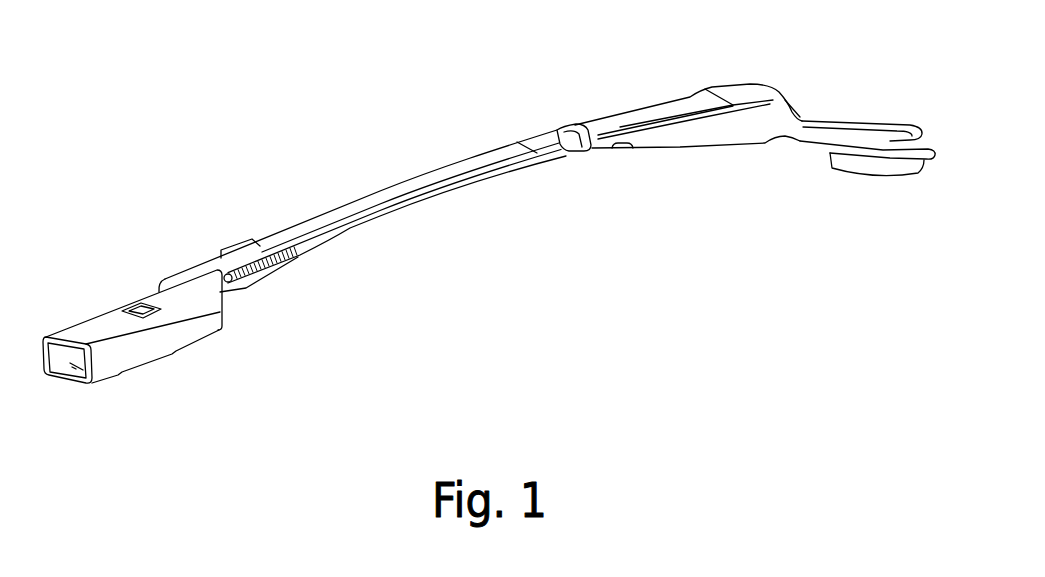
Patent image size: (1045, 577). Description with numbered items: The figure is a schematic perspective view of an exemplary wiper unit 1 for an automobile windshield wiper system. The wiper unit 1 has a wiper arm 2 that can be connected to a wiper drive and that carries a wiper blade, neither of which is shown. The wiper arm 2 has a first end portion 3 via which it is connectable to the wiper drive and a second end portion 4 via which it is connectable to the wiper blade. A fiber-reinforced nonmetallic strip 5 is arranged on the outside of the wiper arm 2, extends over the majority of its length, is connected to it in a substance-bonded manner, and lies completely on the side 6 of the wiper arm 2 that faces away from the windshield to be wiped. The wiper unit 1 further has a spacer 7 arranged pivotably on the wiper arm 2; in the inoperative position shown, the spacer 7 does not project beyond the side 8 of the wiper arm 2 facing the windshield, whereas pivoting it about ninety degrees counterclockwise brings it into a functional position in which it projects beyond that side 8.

The wiper unit 1 is at (421, 97).
The wiper arm 2 is at (583, 106).
The first end portion 3 is at (873, 138).
The second end portion 4 is at (149, 358).
The fiber-reinforced nonmetallic strip 5 is at (412, 187).
The side of the wiper arm facing away from the windshield 6 is at (680, 109).
The spacer 7 is at (251, 282).
The side of the wiper arm facing the windshield 8 is at (644, 151).